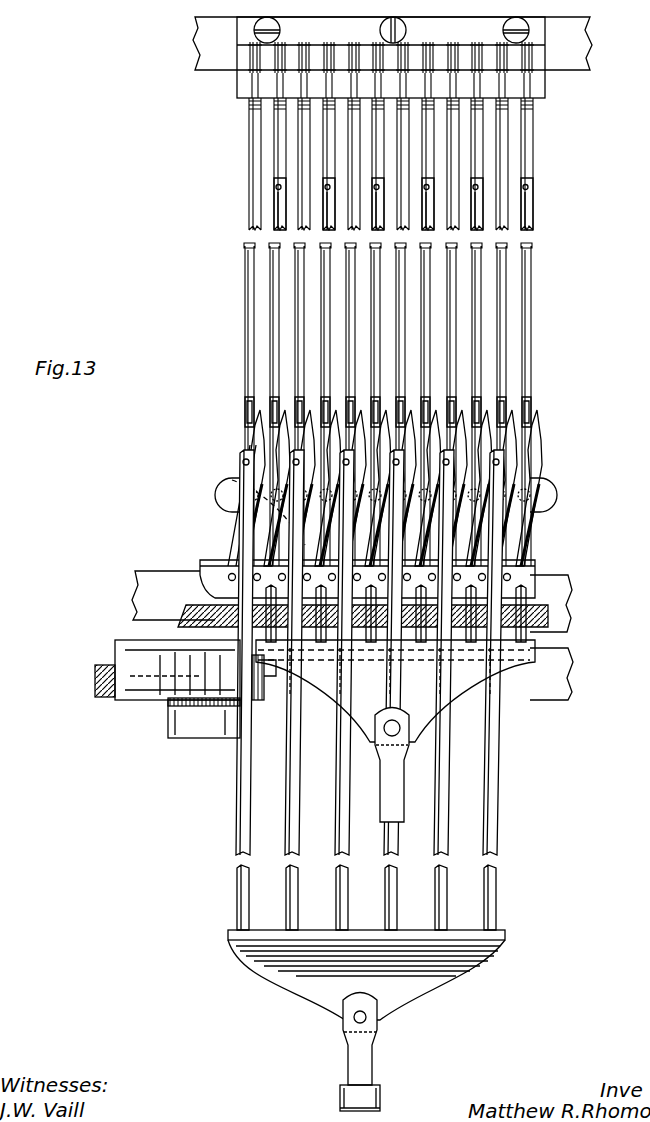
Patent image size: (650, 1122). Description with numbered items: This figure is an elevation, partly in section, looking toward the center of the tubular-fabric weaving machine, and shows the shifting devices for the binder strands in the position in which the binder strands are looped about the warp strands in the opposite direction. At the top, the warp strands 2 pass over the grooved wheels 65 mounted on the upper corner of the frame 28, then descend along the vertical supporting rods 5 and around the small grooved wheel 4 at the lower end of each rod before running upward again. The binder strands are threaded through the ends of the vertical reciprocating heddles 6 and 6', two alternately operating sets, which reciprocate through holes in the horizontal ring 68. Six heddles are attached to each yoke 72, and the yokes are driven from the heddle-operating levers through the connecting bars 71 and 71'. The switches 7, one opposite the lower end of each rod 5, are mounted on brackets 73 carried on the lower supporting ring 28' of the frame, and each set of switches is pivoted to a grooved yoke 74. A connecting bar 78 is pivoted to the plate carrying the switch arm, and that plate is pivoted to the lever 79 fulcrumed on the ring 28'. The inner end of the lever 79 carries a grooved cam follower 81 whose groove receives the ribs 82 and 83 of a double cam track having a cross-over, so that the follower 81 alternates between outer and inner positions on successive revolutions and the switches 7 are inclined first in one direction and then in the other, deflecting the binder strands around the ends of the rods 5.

The warp strands 2 is at (245, 343).
The small grooved wheel 4 is at (244, 400).
The supporting rods 5 is at (245, 297).
The heddles 6 is at (352, 690).
The heddles 6' is at (417, 410).
The switches 7 is at (250, 448).
The frame 28 is at (385, 63).
The lower supporting ring 28' is at (375, 592).
The grooved wheels 65 is at (310, 47).
The horizontal ring 68 is at (552, 615).
The connecting bar 71 is at (379, 1052).
The connecting bar 71' is at (404, 765).
The yoke 72 is at (540, 650).
The brackets 73 is at (555, 495).
The grooved yoke 74 is at (205, 562).
The connecting bar 78 is at (295, 705).
The lever 79 is at (210, 740).
The grooved cam follower 81 is at (120, 700).
The rib 82 is at (555, 705).
The rib 83 is at (95, 685).